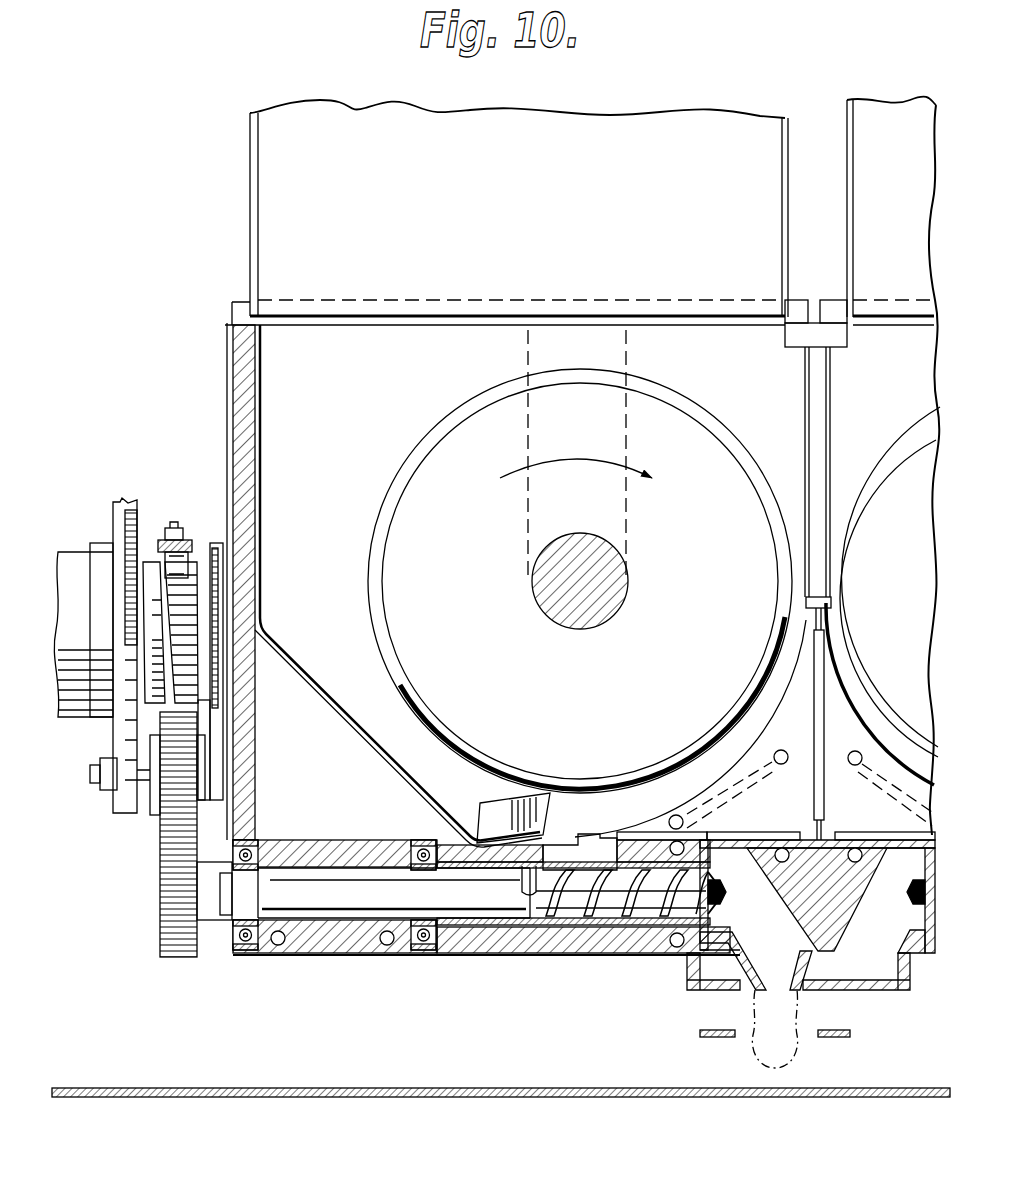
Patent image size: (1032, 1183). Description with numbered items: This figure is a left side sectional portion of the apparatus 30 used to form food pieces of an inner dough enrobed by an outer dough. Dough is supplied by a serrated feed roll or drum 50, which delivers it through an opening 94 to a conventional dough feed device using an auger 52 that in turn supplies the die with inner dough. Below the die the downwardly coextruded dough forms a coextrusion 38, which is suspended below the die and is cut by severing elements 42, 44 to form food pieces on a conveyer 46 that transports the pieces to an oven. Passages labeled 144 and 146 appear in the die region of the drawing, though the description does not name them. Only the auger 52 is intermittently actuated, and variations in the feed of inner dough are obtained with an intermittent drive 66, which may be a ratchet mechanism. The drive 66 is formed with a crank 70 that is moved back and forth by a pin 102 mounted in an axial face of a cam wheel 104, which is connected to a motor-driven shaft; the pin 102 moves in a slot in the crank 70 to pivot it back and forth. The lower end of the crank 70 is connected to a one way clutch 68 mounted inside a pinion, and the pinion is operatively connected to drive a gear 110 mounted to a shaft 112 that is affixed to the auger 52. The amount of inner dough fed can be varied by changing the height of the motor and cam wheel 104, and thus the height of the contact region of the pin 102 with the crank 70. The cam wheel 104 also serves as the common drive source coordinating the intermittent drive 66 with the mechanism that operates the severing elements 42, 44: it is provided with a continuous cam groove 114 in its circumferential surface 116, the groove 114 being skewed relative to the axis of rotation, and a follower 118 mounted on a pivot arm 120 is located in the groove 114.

The apparatus 30 is at (214, 240).
The serrated feed roll 50 is at (430, 432).
The auger 52 is at (607, 905).
The intermittent drive 66 is at (147, 855).
The one way clutch 68 is at (162, 823).
The crank 70 is at (218, 735).
The opening 94 is at (588, 850).
The pin 102 is at (223, 677).
The cam wheel 104 is at (150, 618).
The gear 110 is at (163, 925).
The shaft 112 is at (315, 890).
The cam groove 114 is at (177, 608).
The circumferential surface 116 is at (148, 565).
The follower 118 is at (187, 558).
The pivot arm 120 is at (160, 538).
The nozzle chamber 144 is at (811, 911).
The nozzle chamber 146 is at (895, 900).
The severing element 42 is at (712, 1028).
The severing element 44 is at (847, 1038).
The coextrusion 38 is at (753, 1060).
The conveyer 46 is at (440, 1100).